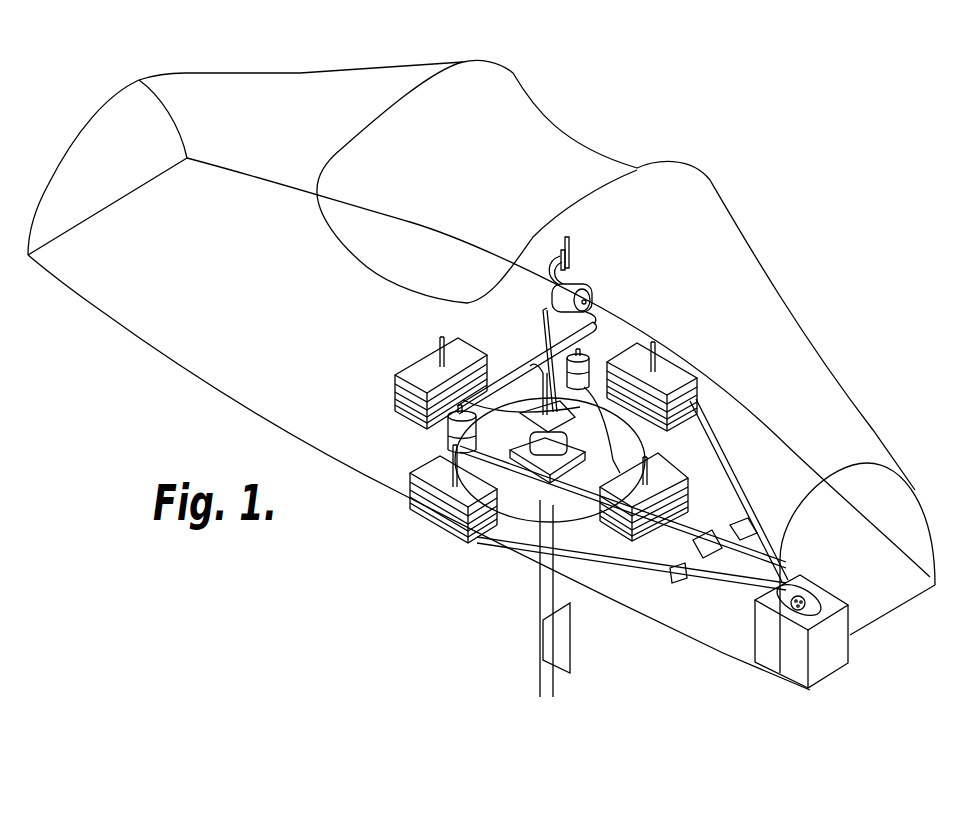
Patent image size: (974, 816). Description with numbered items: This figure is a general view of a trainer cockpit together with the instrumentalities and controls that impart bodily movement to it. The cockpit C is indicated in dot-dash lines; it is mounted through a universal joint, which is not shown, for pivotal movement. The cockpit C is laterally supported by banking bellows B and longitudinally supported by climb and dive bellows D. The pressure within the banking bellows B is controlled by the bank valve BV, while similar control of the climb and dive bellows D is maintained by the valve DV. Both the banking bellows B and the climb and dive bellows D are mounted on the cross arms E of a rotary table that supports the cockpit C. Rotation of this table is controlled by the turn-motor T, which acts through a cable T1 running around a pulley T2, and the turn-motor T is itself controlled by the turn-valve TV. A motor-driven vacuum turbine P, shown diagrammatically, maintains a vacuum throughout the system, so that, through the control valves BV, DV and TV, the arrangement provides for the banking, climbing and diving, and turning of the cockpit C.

The cockpit C is at (680, 187).
The turn-motor T is at (837, 658).
The cross arms E is at (665, 443).
The climb and dive bellows D is at (400, 363).
The banking bellows B is at (665, 370).
The turn-valve TV is at (447, 437).
The valve DV is at (588, 358).
The bank valve BV is at (560, 288).
The cable T1 is at (605, 533).
The pulley T2 is at (538, 525).
The motor-driven vacuum turbine P is at (543, 648).